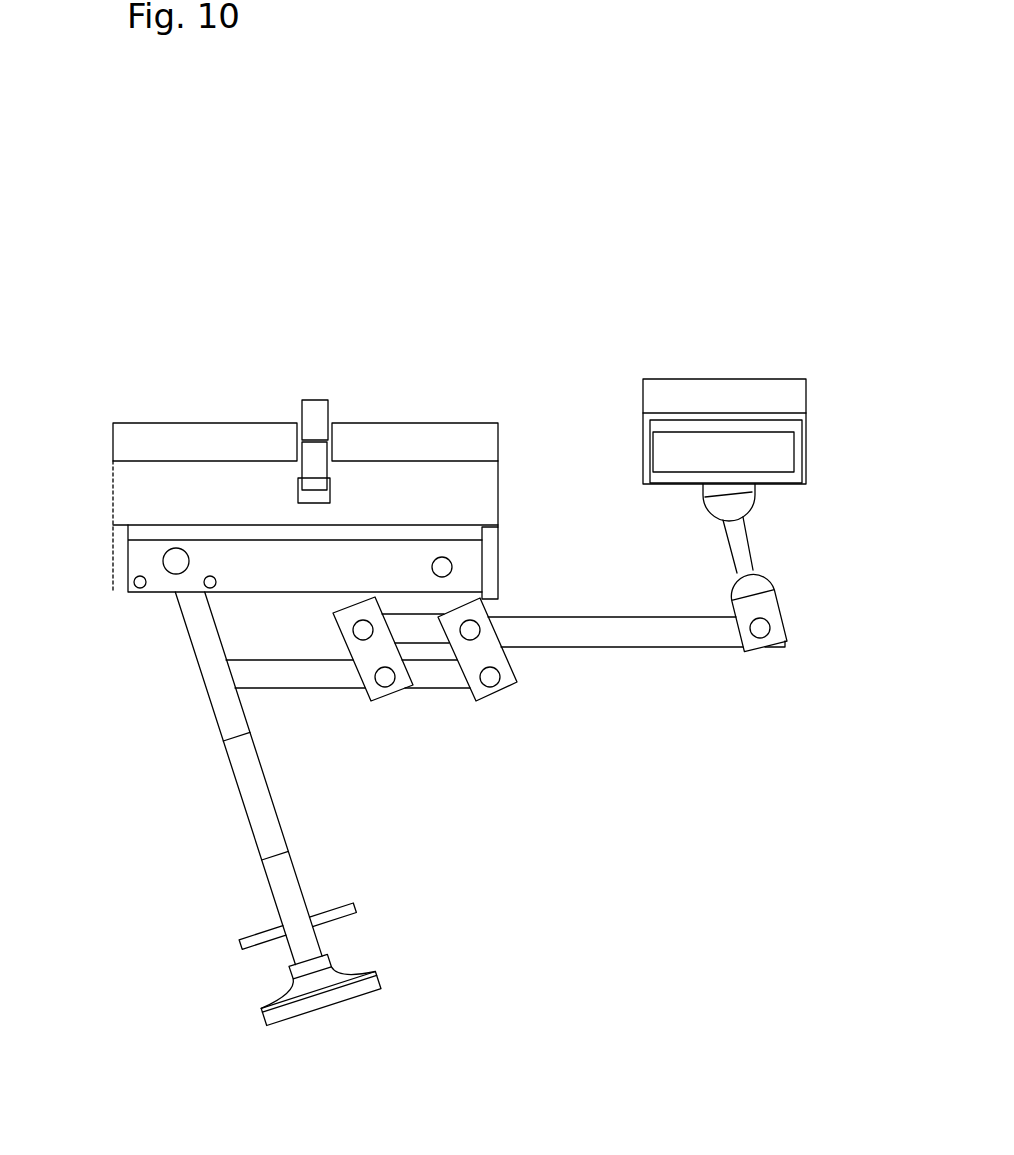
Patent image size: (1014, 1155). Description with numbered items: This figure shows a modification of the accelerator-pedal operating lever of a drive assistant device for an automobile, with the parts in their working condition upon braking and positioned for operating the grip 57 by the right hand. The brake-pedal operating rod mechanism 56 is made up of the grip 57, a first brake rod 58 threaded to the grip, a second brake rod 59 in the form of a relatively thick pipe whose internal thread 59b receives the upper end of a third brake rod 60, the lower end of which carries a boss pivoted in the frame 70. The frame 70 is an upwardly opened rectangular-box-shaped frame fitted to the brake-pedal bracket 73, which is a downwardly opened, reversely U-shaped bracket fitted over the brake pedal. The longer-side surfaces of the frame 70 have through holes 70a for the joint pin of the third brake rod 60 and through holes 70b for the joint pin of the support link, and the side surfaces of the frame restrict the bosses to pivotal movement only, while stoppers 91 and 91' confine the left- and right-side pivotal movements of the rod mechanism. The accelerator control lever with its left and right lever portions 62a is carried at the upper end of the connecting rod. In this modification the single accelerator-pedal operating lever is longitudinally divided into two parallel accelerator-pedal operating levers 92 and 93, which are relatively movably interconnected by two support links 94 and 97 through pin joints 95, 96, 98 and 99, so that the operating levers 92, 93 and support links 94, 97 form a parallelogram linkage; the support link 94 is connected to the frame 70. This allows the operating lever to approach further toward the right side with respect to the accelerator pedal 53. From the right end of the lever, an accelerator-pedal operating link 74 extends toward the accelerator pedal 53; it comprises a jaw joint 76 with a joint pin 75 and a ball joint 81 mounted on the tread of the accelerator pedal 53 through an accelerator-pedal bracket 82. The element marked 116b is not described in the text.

The accelerator pedal 53 is at (773, 445).
The brake-pedal operating rod mechanism 56 is at (196, 746).
The grip 57 is at (352, 1002).
The first brake rod 58 is at (293, 933).
The second brake rod 59 is at (248, 782).
The internal thread 59b is at (318, 417).
The third brake rod 60 is at (207, 645).
The lever portions 62a is at (343, 912).
The frame 70 is at (285, 567).
The through holes 70a is at (175, 563).
The through holes 70b is at (442, 567).
The brake-pedal bracket 73 is at (455, 440).
The accelerator-pedal operating link 74 is at (773, 550).
The joint pin 75 is at (760, 632).
The jaw joint 76 is at (768, 603).
The ball joint 81 is at (720, 507).
The accelerator-pedal bracket 82 is at (682, 475).
The stopper 91 is at (95, 599).
The stopper 91' is at (157, 617).
The accelerator-pedal operating lever 92 is at (295, 675).
The accelerator-pedal operating lever 93 is at (660, 632).
The support link 94 is at (480, 655).
The pin joint 95 is at (488, 678).
The pin joint 96 is at (470, 630).
The support link 97 is at (373, 688).
The pin joint 98 is at (385, 677).
The pin joint 99 is at (360, 632).
The lever 116b is at (453, 512).